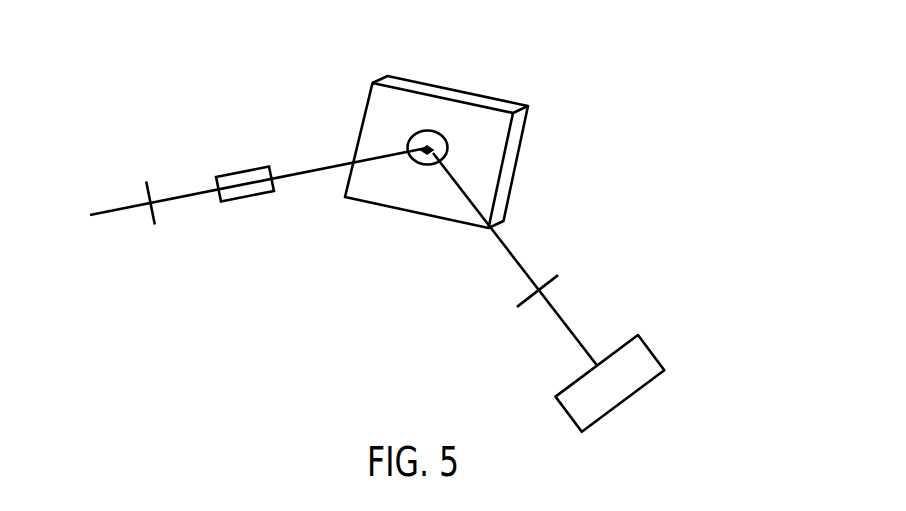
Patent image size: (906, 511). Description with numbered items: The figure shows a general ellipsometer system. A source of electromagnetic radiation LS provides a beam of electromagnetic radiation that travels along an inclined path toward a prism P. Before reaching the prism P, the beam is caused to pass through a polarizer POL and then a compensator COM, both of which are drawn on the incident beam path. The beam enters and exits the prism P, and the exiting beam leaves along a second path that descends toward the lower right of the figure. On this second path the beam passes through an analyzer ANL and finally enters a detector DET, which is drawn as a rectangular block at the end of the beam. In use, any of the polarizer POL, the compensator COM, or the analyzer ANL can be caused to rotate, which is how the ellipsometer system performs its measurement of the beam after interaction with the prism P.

The source of electromagnetic radiation LS is at (240, 189).
The polarizer POL is at (155, 233).
The compensator COM is at (240, 165).
The prism P is at (430, 133).
The analyzer ANL is at (565, 268).
The detector DET is at (658, 343).